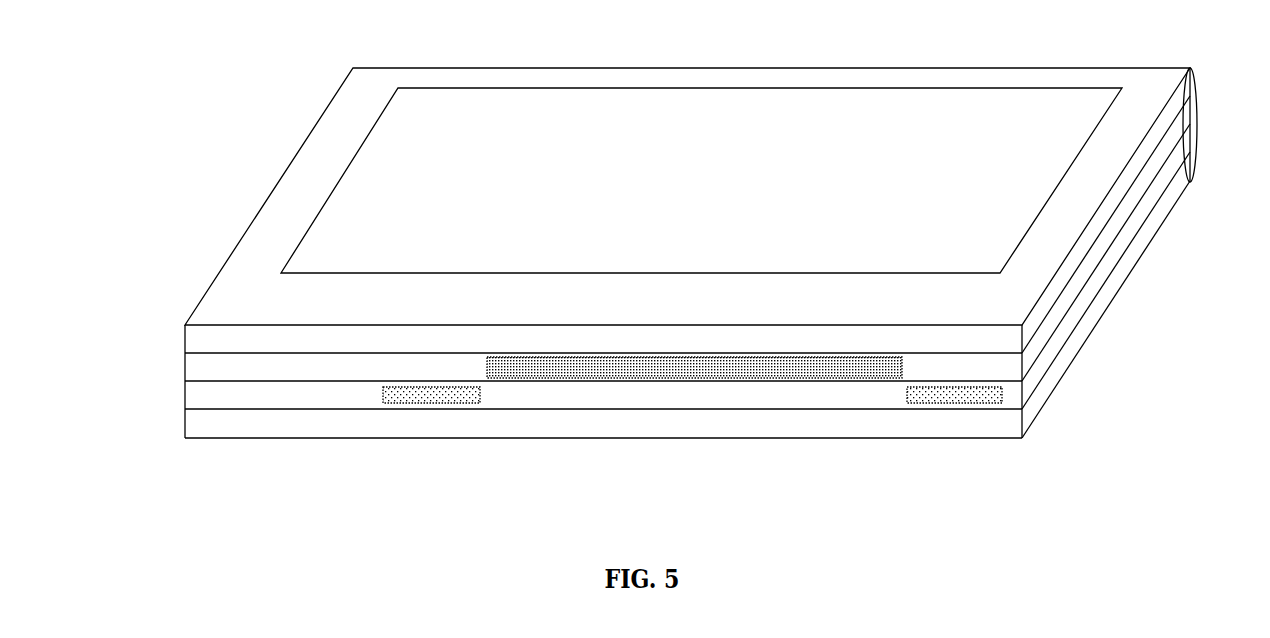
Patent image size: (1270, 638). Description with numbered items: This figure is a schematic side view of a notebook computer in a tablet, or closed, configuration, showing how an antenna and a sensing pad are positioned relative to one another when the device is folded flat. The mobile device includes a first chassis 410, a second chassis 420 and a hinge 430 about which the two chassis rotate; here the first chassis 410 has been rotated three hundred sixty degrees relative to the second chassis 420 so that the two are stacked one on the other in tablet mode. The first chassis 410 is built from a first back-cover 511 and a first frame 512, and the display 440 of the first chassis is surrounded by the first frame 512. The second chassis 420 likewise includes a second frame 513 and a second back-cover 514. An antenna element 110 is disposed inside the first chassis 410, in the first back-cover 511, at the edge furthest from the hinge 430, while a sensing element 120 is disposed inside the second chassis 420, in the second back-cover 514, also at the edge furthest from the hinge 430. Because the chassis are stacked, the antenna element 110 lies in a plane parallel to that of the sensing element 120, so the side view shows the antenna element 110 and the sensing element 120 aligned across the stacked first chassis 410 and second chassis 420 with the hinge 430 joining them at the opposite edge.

The antenna element 110 is at (677, 383).
The sensing element 120 is at (425, 404).
The first chassis 410 is at (122, 328).
The second chassis 420 is at (122, 388).
The hinge 430 is at (1191, 127).
The display 440 is at (913, 108).
The first back-cover 511 is at (185, 368).
The first frame 512 is at (185, 340).
The second frame 513 is at (185, 425).
The second back-cover 514 is at (185, 402).